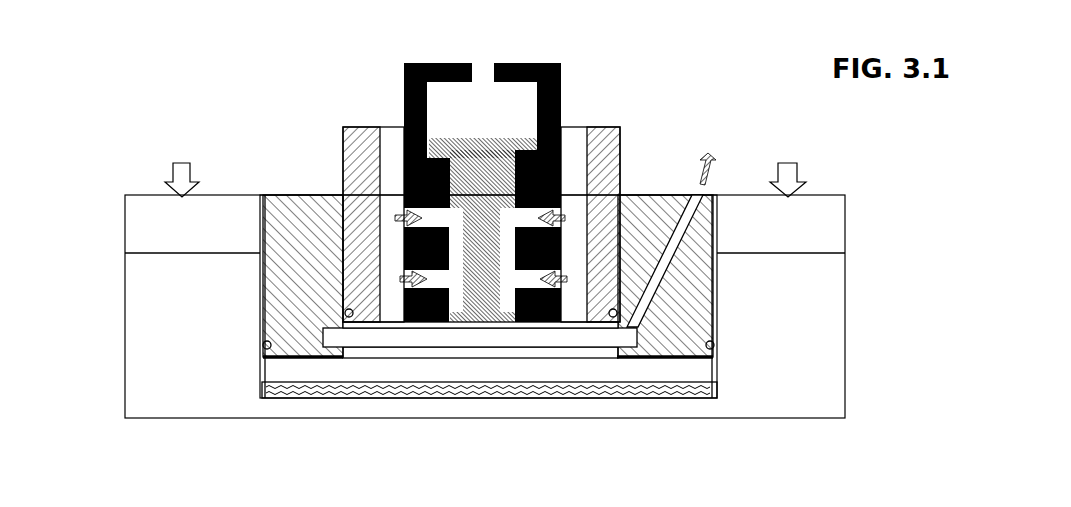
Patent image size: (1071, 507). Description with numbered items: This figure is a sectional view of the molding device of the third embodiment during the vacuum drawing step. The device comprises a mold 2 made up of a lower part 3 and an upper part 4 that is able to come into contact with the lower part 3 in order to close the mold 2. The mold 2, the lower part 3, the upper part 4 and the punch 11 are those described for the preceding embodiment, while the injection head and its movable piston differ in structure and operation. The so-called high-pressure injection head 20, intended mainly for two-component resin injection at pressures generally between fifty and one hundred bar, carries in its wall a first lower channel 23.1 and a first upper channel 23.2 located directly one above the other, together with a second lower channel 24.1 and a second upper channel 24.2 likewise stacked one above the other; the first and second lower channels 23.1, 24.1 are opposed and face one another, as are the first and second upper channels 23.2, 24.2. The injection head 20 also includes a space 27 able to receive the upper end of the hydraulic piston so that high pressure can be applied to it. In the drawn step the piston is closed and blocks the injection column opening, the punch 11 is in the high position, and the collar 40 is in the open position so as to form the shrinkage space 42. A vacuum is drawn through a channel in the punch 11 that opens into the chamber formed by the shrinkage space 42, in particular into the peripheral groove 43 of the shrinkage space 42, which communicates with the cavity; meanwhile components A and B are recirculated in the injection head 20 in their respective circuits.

The mold 2 is at (104, 294).
The lower part 3 is at (145, 380).
The upper part 4 is at (140, 208).
The punch 11 is at (702, 253).
The injection head 20 is at (568, 77).
The first lower channel 23.1 is at (565, 210).
The first upper channel 23.2 is at (568, 273).
The second lower channel 24.1 is at (395, 208).
The second upper channel 24.2 is at (398, 271).
The space 27 is at (455, 92).
The collar 40 is at (608, 268).
The shrinkage space 42 is at (400, 337).
The peripheral groove 43 is at (325, 333).